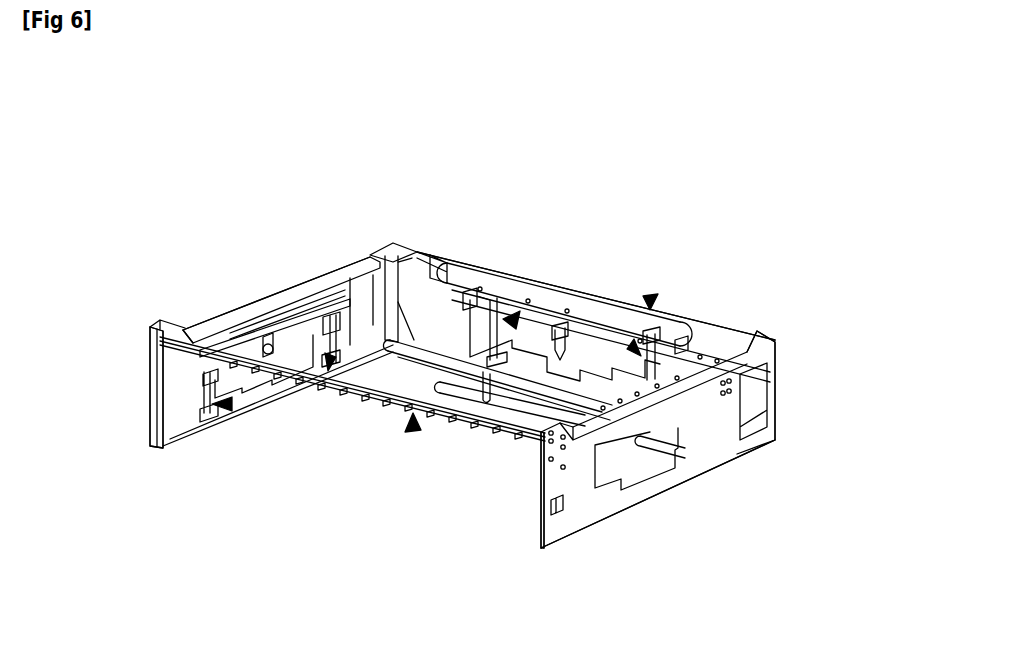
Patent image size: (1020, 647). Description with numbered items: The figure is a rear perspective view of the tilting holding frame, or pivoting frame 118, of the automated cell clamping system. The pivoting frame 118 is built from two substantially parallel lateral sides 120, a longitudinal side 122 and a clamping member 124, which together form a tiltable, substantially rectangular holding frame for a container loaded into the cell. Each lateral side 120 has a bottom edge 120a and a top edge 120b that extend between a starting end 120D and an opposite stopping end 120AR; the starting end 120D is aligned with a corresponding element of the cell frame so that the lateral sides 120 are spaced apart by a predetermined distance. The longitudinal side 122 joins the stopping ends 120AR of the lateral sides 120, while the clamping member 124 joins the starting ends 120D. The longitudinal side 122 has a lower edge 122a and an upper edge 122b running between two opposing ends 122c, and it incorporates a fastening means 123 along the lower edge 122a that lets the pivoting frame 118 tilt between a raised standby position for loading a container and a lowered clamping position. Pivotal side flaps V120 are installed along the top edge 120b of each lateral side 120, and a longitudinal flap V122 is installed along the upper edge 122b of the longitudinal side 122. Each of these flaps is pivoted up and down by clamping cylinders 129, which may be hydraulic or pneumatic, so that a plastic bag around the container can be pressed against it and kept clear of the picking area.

The pivoting frame 118 is at (287, 240).
The lateral side 120 is at (173, 389).
The bottom edge 120a is at (202, 434).
The top edge 120b is at (153, 327).
The starting end 120D is at (152, 429).
The stopping end 120AR is at (412, 249).
The longitudinal side 122 is at (685, 354).
The lower edge 122a is at (397, 376).
The upper edge 122b is at (444, 266).
The opposing end 122c is at (393, 243).
The fastening means 123 is at (528, 406).
The clamping member 124 is at (412, 426).
The clamping cylinder 129 is at (328, 360).
The side flap V120 is at (259, 314).
The longitudinal flap V122 is at (651, 298).